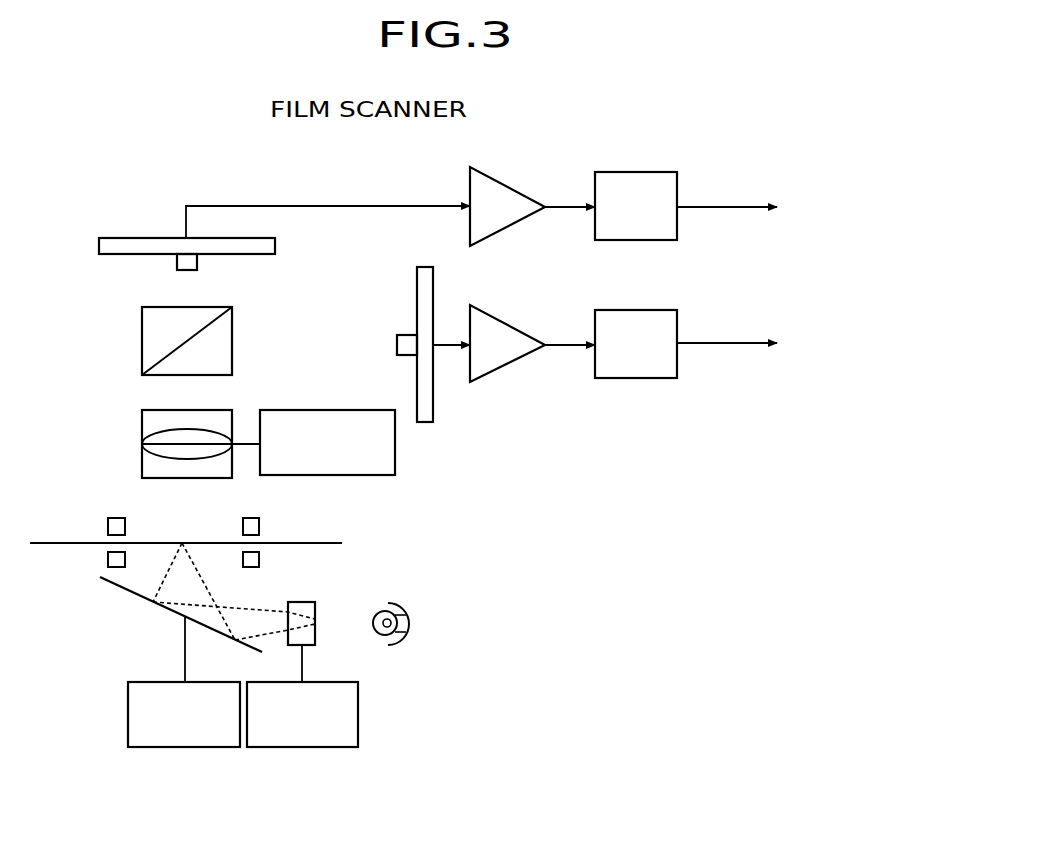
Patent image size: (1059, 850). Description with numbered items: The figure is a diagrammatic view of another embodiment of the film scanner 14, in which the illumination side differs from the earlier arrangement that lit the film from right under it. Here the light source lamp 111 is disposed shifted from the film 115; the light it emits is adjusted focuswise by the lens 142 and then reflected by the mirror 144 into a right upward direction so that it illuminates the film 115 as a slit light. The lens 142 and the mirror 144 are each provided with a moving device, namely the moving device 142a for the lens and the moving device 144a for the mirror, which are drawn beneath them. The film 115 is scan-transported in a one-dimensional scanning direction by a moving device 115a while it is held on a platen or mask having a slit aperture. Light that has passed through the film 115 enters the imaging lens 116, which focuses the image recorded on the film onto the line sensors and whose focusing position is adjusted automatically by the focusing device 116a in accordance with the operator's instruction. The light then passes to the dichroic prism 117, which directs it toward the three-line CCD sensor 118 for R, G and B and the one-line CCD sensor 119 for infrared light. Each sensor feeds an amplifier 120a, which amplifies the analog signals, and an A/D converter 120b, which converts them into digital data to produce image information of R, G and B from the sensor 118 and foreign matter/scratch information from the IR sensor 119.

The film scanner 14 is at (372, 184).
The 3-line CCD sensor for R, G and B 118 is at (122, 237).
The amplifier 120a is at (505, 222).
The A/D converter 120b is at (680, 224).
The 1-line CCD sensor for IR 119 is at (437, 402).
The dichroic prism 117 is at (142, 328).
The imaging lens 116 is at (142, 425).
The focusing device 116a is at (395, 462).
The film 115 is at (342, 542).
The moving device 115a is at (103, 518).
The mirror 144 is at (133, 592).
The lens 142 is at (316, 608).
The light source lamp 111 is at (418, 622).
The moving device 144a is at (180, 748).
The moving device 142a is at (308, 748).